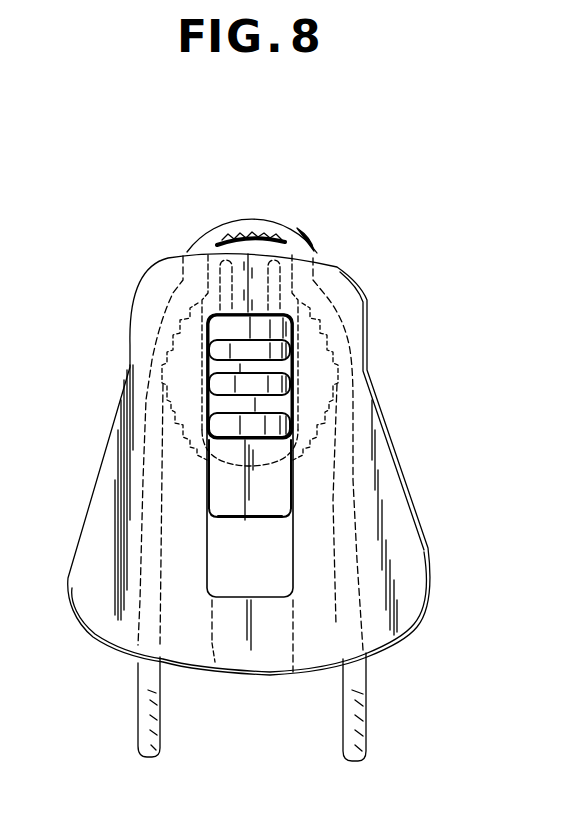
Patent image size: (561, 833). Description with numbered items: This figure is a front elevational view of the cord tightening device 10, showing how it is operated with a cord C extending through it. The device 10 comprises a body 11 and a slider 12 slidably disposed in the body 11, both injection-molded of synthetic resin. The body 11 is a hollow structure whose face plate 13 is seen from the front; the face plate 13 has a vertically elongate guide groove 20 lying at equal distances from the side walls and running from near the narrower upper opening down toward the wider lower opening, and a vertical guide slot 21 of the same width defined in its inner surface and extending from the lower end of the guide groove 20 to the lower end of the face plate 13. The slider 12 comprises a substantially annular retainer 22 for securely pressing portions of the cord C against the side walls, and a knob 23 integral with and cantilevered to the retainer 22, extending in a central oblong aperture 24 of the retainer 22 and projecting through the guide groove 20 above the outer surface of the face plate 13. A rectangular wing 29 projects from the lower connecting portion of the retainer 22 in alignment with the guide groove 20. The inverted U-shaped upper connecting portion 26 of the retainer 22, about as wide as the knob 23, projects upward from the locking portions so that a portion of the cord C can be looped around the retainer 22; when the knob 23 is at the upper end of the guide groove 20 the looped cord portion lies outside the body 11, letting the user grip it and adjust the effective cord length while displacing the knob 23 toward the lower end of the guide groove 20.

The cord tightening device 10 is at (324, 238).
The body 11 is at (407, 652).
The slider 12 is at (434, 294).
The face plate 13 is at (95, 500).
The guide groove 20 is at (282, 575).
The guide slot 21 is at (218, 668).
The retainer 22 is at (337, 356).
The knob 23 is at (296, 334).
The central oblong aperture 24 is at (263, 442).
The upper connecting portion 26 is at (237, 260).
The wing 29 is at (255, 513).
The cord C is at (255, 226).